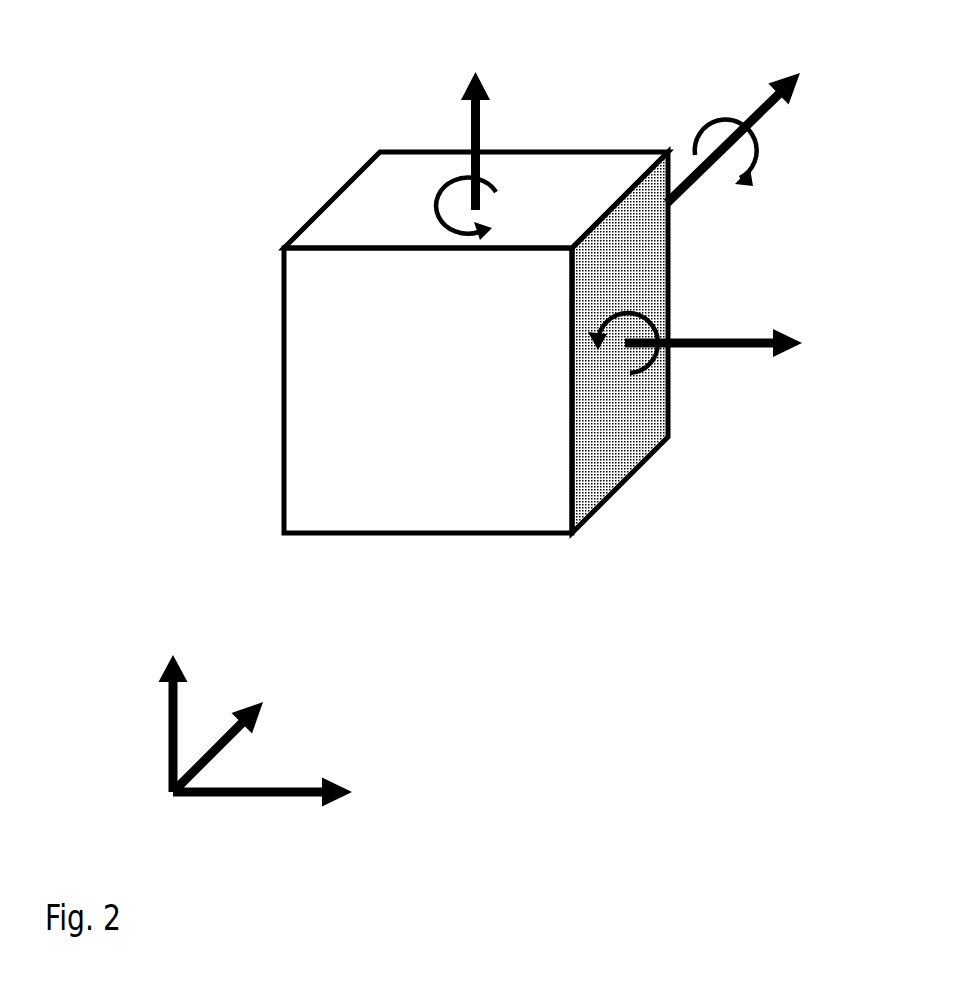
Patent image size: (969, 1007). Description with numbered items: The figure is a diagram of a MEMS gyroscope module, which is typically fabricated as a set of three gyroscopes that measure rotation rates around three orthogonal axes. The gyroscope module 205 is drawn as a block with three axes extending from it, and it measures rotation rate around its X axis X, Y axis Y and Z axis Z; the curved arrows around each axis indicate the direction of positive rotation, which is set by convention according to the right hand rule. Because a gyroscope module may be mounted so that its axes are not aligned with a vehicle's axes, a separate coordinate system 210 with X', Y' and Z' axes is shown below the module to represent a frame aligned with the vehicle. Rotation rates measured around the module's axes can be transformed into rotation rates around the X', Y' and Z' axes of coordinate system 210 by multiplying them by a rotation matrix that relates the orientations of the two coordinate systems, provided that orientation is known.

The gyroscope module 205 is at (559, 272).
The coordinate system 210 is at (208, 802).
The X axis X is at (711, 343).
The Y axis Y is at (749, 107).
The Z axis Z is at (466, 129).